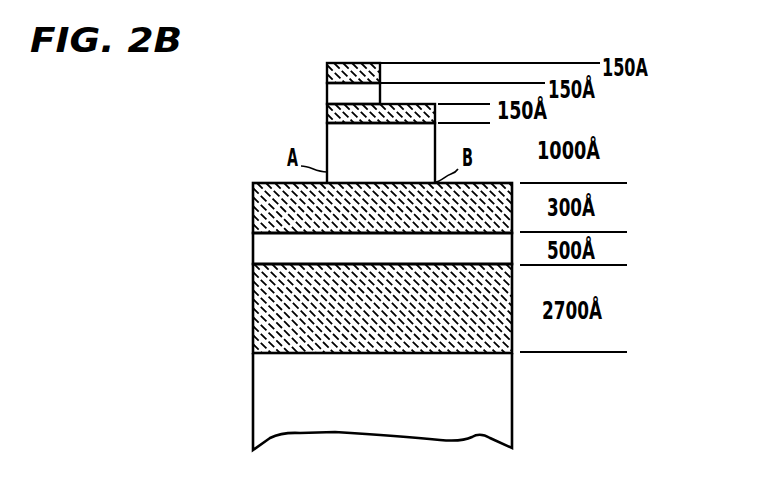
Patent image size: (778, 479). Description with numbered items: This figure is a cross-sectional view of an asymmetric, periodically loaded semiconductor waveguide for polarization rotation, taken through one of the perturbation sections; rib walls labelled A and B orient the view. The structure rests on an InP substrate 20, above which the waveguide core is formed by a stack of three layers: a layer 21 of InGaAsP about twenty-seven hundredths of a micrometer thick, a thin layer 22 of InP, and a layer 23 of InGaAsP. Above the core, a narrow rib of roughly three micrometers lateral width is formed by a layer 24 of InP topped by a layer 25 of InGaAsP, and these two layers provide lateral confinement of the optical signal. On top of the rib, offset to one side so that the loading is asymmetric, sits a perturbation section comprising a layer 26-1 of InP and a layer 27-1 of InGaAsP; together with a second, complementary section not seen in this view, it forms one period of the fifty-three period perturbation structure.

The InP substrate 20 is at (253, 398).
The layer 21 is at (253, 304).
The layer 22 is at (253, 250).
The layer 23 is at (253, 198).
The layer 24 is at (327, 138).
The layer 25 is at (327, 110).
The layer 26-1 is at (327, 88).
The layer 27-1 is at (327, 63).